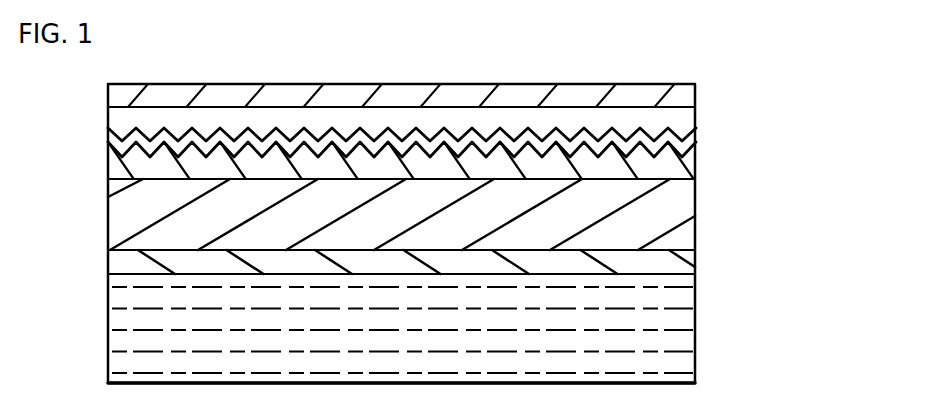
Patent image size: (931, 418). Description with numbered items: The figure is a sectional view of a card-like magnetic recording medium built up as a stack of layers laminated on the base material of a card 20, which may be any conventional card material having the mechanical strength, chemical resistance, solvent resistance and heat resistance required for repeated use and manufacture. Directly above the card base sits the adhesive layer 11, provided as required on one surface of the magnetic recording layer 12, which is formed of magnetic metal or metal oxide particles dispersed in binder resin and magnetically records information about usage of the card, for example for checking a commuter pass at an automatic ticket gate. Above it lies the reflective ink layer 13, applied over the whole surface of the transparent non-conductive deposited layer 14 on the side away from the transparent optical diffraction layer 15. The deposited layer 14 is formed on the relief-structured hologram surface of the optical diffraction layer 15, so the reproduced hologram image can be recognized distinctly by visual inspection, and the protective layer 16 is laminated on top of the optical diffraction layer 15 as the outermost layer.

The adhesive layer 11 is at (680, 262).
The magnetic recording layer 12 is at (680, 223).
The reflective ink layer 13 is at (680, 168).
The transparent non-conductive deposited layer 14 is at (680, 150).
The transparent optical diffraction layer 15 is at (680, 123).
The protective layer 16 is at (680, 93).
The base material of a card 20 is at (680, 338).